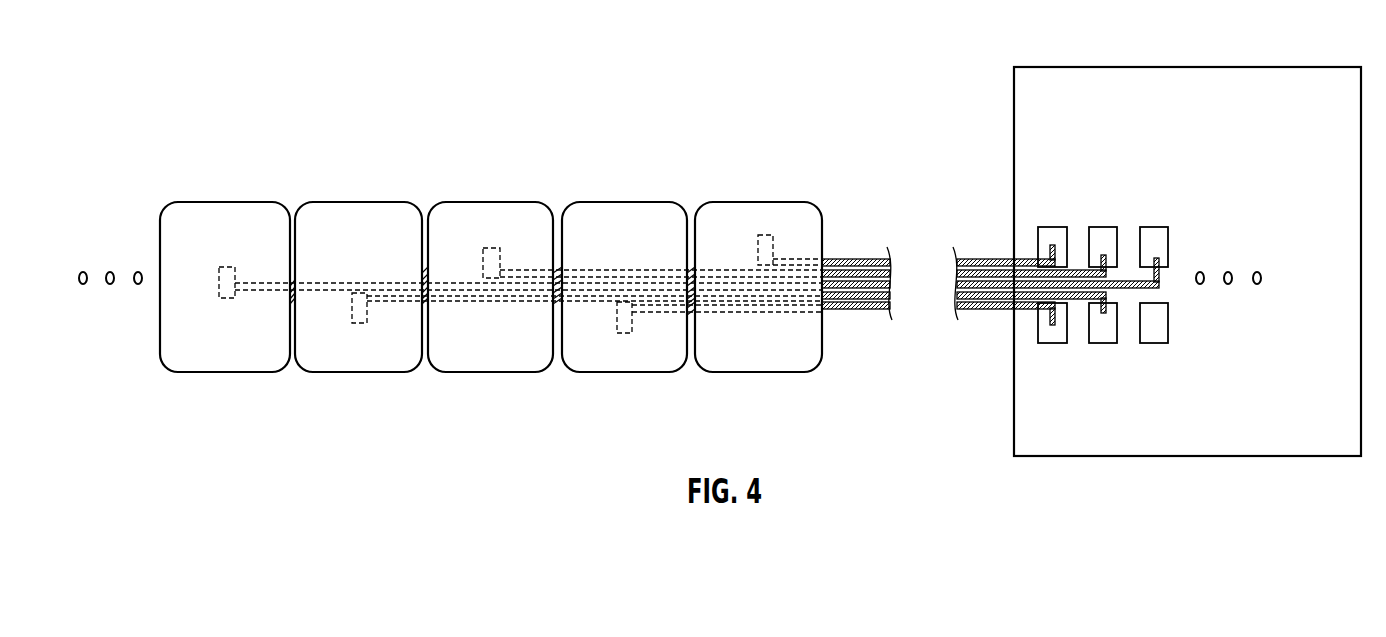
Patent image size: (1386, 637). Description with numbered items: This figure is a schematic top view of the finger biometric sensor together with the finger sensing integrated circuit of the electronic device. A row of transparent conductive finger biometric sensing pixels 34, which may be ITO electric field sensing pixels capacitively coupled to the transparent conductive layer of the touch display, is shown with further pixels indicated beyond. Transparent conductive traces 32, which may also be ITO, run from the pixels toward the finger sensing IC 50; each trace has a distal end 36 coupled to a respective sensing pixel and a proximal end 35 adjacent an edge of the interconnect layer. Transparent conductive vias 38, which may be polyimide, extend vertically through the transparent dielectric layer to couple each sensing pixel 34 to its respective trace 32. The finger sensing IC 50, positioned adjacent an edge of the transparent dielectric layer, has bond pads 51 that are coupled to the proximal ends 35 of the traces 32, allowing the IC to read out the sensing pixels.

The transparent conductive traces 32 is at (850, 322).
The transparent conductive finger biometric sensing pixels 34 is at (223, 372).
The proximal ends 35 is at (872, 311).
The distal ends 36 is at (257, 283).
The transparent conductive vias 38 is at (358, 323).
The finger sensing integrated circuit 50 is at (1014, 67).
The bond pads 51 is at (1154, 227).